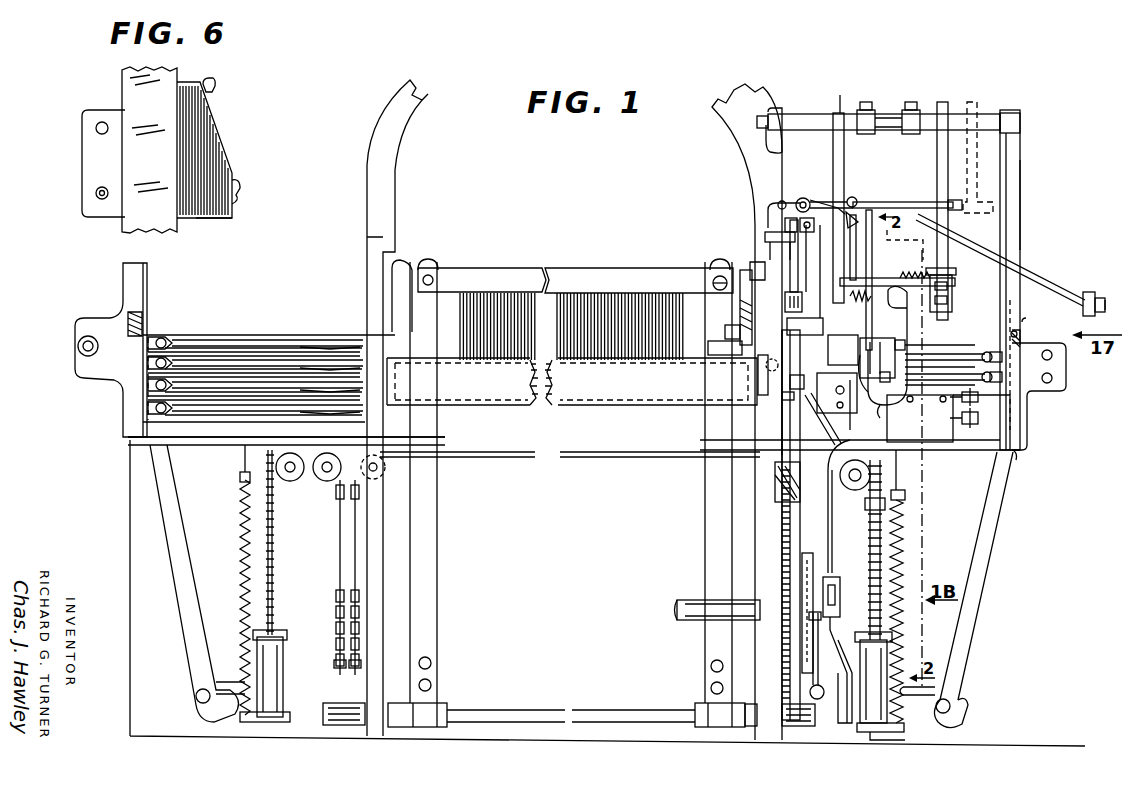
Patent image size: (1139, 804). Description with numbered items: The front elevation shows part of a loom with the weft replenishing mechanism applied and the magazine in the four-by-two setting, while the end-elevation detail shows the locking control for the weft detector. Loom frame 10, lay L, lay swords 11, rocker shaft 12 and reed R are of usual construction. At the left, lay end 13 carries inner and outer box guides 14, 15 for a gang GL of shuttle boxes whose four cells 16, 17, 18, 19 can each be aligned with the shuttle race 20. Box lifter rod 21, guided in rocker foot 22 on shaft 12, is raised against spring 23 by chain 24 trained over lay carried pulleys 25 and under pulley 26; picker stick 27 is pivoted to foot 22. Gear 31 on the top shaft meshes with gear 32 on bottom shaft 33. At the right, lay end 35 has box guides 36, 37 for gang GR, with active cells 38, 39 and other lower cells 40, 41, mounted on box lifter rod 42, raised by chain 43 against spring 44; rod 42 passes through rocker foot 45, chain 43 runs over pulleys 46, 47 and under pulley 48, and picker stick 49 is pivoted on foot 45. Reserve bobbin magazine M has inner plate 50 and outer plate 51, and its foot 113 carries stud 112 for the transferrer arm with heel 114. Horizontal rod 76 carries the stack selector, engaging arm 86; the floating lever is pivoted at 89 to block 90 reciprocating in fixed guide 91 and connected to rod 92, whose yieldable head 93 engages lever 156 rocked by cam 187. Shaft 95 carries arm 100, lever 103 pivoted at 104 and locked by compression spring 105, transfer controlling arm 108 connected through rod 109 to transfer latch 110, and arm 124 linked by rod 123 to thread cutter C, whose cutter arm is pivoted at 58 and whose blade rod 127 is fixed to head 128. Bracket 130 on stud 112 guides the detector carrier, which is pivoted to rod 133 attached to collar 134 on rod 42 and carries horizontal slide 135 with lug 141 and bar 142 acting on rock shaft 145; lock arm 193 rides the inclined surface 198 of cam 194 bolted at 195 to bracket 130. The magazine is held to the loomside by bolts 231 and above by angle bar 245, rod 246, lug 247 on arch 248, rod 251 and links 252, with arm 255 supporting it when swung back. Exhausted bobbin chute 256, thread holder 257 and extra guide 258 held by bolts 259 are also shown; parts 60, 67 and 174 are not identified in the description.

In FIG. 1, the loom frame 10 is at (380, 540).
In FIG. 1, the lay swords 11 is at (432, 572).
In FIG. 1, the rocker shaft 12 is at (500, 708).
In FIG. 1, the lay end 13 is at (143, 440).
In FIG. 1, the inner box guide 14 is at (398, 272).
In FIG. 1, the outer box guide 15 is at (124, 283).
In FIG. 1, the cell 16 is at (286, 346).
In FIG. 1, the cell 17 is at (358, 364).
In FIG. 1, the cell 18 is at (358, 386).
In FIG. 1, the cell 19 is at (358, 409).
In FIG. 1, the shuttle race 20 is at (546, 350).
In FIG. 1, the box lifter rod 21 is at (272, 611).
In FIG. 1, the rocker foot 22 is at (290, 706).
In FIG. 1, the spring 23 is at (276, 581).
In FIG. 1, the chain 24 is at (338, 505).
In FIG. 1, the lay carried pulleys 25 is at (322, 482).
In FIG. 1, the pulley 26 is at (336, 648).
In FIG. 1, the picker stick 27 is at (173, 573).
In FIG. 1, the gear 31 is at (792, 486).
In FIG. 1, the gear 32 is at (788, 533).
In FIG. 1, the bottom shaft 33 is at (700, 621).
In FIG. 1, the lay end 35 is at (1015, 453).
In FIG. 1, the inner box guide 36 is at (740, 306).
In FIG. 1, the outer box guide 37 is at (1020, 346).
In FIG. 1, the upper cell 38 is at (1000, 358).
In FIG. 1, the lower cell 39 is at (1000, 377).
In FIG. 1, the lower cell 40 is at (978, 398).
In FIG. 1, the lower cell 41 is at (978, 420).
In FIG. 1, the box lifter rod 42 is at (870, 539).
In FIG. 1, the chain 43 is at (866, 503).
In FIG. 1, the spring 44 is at (878, 559).
In FIG. 1, the rocker foot 45 is at (948, 693).
In FIG. 1, the lay carried pulley 46 is at (843, 475).
In FIG. 1, the lay carried pulley 47 is at (382, 476).
In FIG. 1, the pulley 48 is at (360, 651).
In FIG. 1, the picker stick 49 is at (981, 573).
In FIG. 1, the inner plate 50 is at (833, 143).
In FIG. 1, the outer plate 51 is at (943, 102).
In FIG. 1, the pivot 58 is at (713, 284).
In FIG. 1, the link 60 is at (912, 315).
In FIG. 1, the block 67 is at (945, 311).
In FIG. 1, the horizontal rod 76 is at (790, 228).
In FIG. 1, the arm 86 is at (765, 236).
In FIG. 1, the pivot 89 is at (764, 362).
In FIG. 1, the block 90 is at (780, 393).
In FIG. 1, the fixed guide 91 is at (790, 381).
In FIG. 1, the rod 92 is at (784, 433).
In FIG. 1, the yieldable head 93 is at (826, 637).
In FIG. 1, the shaft 95 is at (803, 198).
In FIG. 1, the arm 100 is at (830, 223).
In FIG. 1, the lever 103 is at (856, 226).
In FIG. 1, the pivot 104 is at (862, 208).
In FIG. 1, the compression spring 105 is at (826, 206).
In FIG. 1, the transfer controlling arm 108 is at (852, 197).
In FIG. 1, the rod 109 is at (866, 261).
In FIG. 1, the transfer latch 110 is at (840, 341).
In FIG. 1, the stud 112 is at (903, 307).
In FIG. 1, the foot 113 is at (809, 313).
In FIG. 1, the heel 114 is at (895, 282).
In FIG. 1, the rod 123 is at (768, 224).
In FIG. 1, the arm 124 is at (787, 202).
In FIG. 1, the rod 127 is at (740, 338).
In FIG. 1, the head 128 is at (750, 262).
In FIG. 6, the bracket 130 is at (128, 82).
In FIG. 1, the rod 133 is at (850, 428).
In FIG. 1, the collar 134 is at (885, 736).
In FIG. 1, the horizontal slide 135 is at (882, 351).
In FIG. 1, the lug 141 is at (837, 393).
In FIG. 1, the bar 142 is at (862, 381).
In FIG. 1, the rock shaft 145 is at (876, 411).
In FIG. 1, the lever 156 is at (830, 655).
In FIG. 1, the part 174 is at (896, 345).
In FIG. 1, the cam 187 is at (802, 566).
In FIG. 6, the arm 193 is at (210, 84).
In FIG. 6, the cam 194 is at (202, 220).
In FIG. 6, the bolt 195 is at (96, 194).
In FIG. 1, the bolt 195 is at (893, 380).
In FIG. 6, the inclined surface 198 is at (232, 134).
In FIG. 1, the bolts 231 is at (762, 389).
In FIG. 1, the angle bar 245 is at (1020, 179).
In FIG. 1, the rod 246 is at (1005, 113).
In FIG. 1, the lug 247 is at (795, 114).
In FIG. 1, the arch 248 is at (745, 132).
In FIG. 1, the rod 251 is at (886, 116).
In FIG. 1, the links 252 is at (865, 108).
In FIG. 1, the arm 255 is at (1012, 243).
In FIG. 1, the exhausted bobbin chute 256 is at (974, 442).
In FIG. 1, the thread holder 257 is at (1042, 283).
In FIG. 1, the extra guide 258 is at (1022, 326).
In FIG. 1, the bolts 259 is at (1020, 336).
In FIG. 1, the thread cutter C is at (708, 348).
In FIG. 1, the gang of shuttle boxes GL is at (160, 338).
In FIG. 1, the gang of boxes GR is at (985, 353).
In FIG. 1, the lay L is at (539, 401).
In FIG. 1, the reserve bobbin magazine M is at (839, 95).
In FIG. 1, the reed R is at (633, 290).